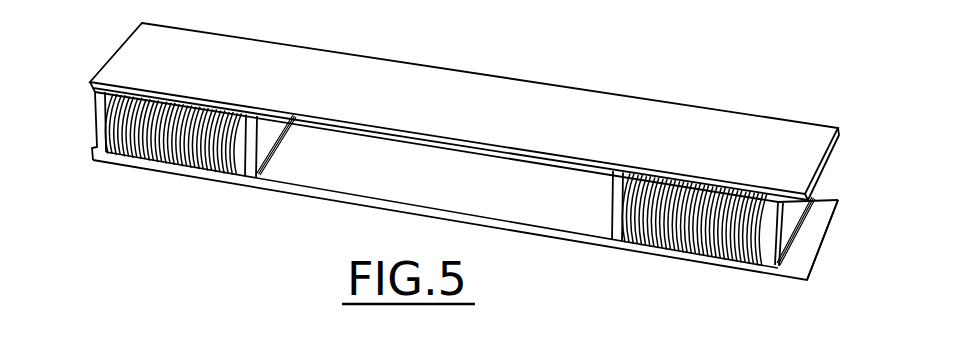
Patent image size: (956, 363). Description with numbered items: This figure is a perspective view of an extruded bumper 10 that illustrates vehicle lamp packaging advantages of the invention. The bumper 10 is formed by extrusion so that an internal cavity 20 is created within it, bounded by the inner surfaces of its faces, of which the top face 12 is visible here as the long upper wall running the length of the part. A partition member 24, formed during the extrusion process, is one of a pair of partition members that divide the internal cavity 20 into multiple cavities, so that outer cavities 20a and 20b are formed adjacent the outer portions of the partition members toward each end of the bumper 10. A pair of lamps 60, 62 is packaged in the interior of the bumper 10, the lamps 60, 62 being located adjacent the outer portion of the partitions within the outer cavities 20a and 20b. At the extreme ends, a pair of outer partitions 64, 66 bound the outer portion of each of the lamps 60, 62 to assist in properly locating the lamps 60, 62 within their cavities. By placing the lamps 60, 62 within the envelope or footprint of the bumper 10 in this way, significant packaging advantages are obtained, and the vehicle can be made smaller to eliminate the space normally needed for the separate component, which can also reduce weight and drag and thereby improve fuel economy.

The extruded bumper 10 is at (477, 54).
The top face 12 is at (585, 102).
The internal cavity 20 is at (433, 188).
The outer cavity 20a is at (106, 155).
The outer cavity 20b is at (753, 253).
The partition member 24 is at (615, 218).
The lamp 60 is at (168, 145).
The lamp 62 is at (688, 230).
The outer partition 64 is at (101, 116).
The outer partition 66 is at (772, 227).